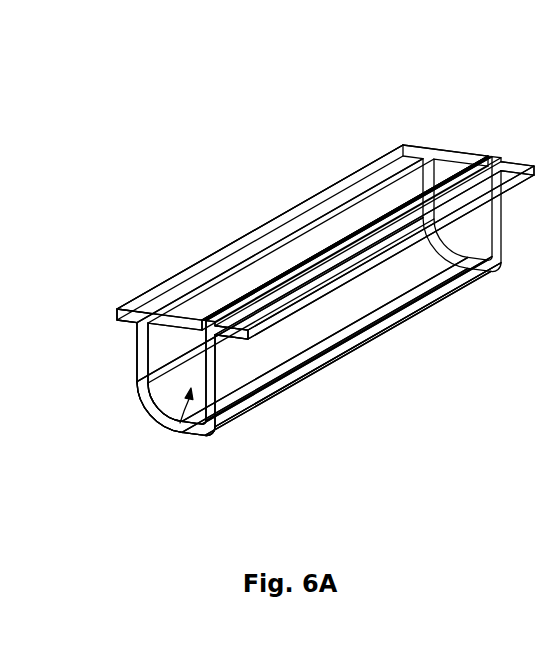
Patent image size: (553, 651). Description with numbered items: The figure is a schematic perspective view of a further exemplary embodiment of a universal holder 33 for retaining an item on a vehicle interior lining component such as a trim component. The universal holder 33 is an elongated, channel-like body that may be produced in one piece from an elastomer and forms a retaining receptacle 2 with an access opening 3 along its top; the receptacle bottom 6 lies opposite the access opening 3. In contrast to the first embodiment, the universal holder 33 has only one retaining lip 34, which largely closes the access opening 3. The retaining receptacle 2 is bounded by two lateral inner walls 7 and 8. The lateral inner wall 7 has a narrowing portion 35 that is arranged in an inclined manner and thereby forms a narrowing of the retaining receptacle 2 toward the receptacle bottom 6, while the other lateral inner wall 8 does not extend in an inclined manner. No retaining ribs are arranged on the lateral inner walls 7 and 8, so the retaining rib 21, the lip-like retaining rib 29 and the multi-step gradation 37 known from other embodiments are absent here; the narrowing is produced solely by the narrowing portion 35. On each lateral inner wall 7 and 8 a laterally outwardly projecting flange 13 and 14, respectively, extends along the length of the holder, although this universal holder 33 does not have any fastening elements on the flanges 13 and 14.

The universal holder 33 is at (366, 100).
The retaining lip 34 is at (466, 156).
The flange 14 is at (512, 163).
The flange 13 is at (135, 311).
The access opening 3 is at (203, 316).
The lateral inner wall 7 is at (142, 344).
The retaining rib 21 is at (158, 397).
The lip-like retaining rib 29 is at (158, 413).
The narrowing portion 35 is at (160, 420).
The retaining receptacle 2 is at (160, 421).
The receptacle bottom 6 is at (202, 436).
The lateral inner wall 8 is at (235, 408).
The multi-step gradation 37 is at (258, 392).